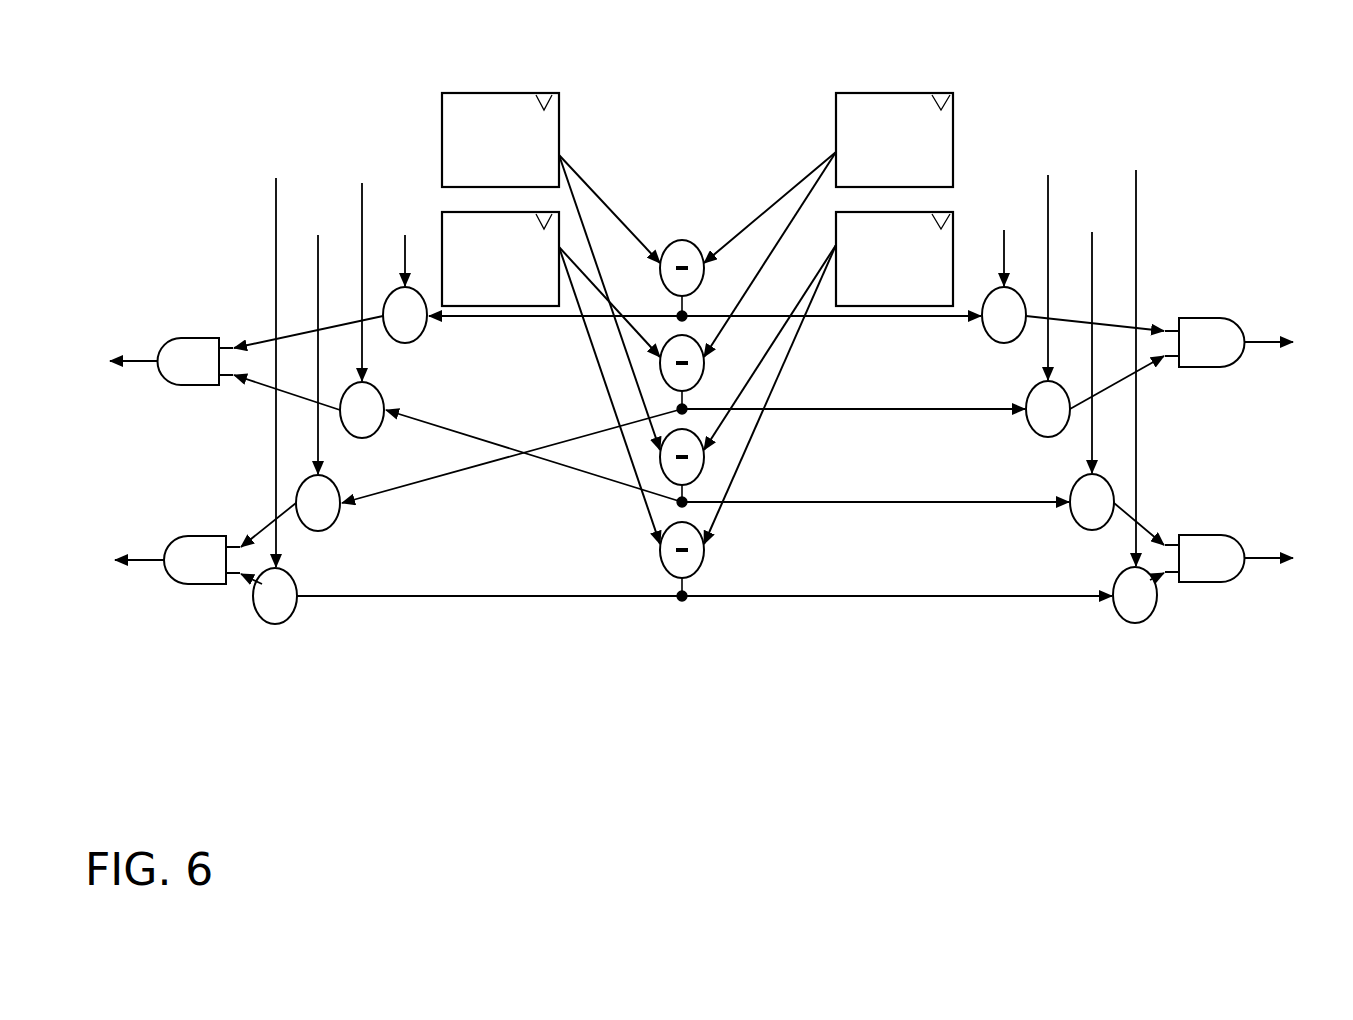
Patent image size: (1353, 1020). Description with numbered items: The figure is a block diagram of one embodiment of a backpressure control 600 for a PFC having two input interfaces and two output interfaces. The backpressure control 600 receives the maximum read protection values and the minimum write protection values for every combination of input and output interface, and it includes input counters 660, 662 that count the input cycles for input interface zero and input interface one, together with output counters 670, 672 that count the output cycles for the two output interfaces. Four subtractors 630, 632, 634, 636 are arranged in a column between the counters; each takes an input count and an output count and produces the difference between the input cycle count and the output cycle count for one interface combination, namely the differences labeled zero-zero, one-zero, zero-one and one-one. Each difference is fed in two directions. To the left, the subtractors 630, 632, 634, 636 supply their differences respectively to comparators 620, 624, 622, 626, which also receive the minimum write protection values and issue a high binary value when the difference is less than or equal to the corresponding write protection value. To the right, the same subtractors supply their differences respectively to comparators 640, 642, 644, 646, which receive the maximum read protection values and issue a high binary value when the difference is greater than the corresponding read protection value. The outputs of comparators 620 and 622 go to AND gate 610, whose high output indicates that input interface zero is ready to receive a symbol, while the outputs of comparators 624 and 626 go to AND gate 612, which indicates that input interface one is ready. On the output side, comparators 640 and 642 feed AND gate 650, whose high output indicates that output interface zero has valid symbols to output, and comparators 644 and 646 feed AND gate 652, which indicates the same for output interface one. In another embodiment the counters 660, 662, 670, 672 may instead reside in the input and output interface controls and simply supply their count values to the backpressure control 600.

The backpressure control 600 is at (659, 719).
The AND gate 610 is at (195, 338).
The AND gate 612 is at (200, 536).
The comparator 620 is at (405, 344).
The comparator 622 is at (362, 438).
The comparator 624 is at (318, 531).
The comparator 626 is at (275, 624).
The subtractor 630 is at (682, 240).
The subtractor 632 is at (705, 370).
The subtractor 634 is at (705, 463).
The subtractor 636 is at (705, 553).
The comparator 640 is at (1003, 343).
The comparator 642 is at (1048, 437).
The comparator 644 is at (1092, 530).
The comparator 646 is at (1135, 624).
The AND gate 650 is at (1193, 318).
The AND gate 652 is at (1193, 535).
The input counter 660 is at (559, 110).
The input counter 662 is at (442, 211).
The output counter 670 is at (836, 110).
The output counter 672 is at (953, 212).